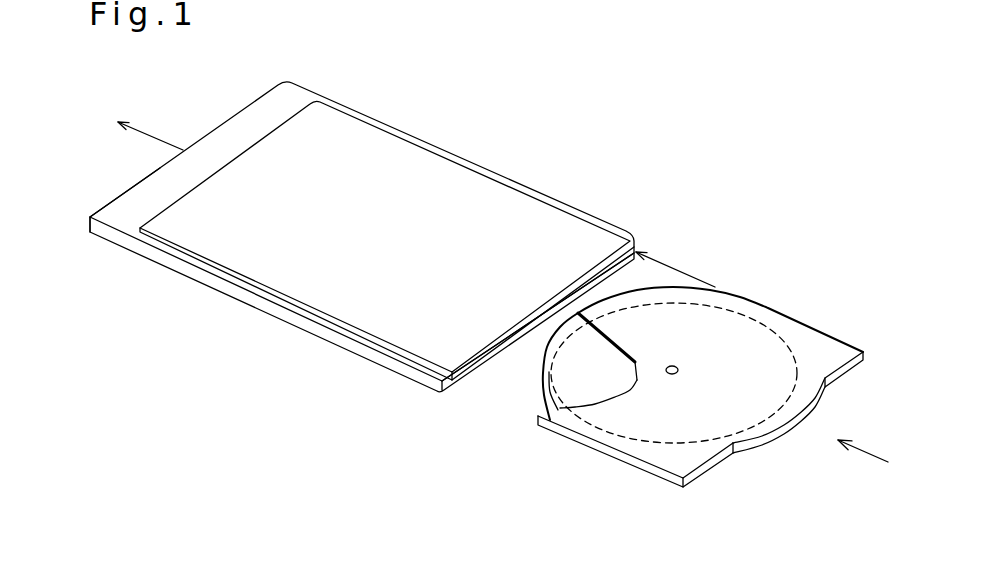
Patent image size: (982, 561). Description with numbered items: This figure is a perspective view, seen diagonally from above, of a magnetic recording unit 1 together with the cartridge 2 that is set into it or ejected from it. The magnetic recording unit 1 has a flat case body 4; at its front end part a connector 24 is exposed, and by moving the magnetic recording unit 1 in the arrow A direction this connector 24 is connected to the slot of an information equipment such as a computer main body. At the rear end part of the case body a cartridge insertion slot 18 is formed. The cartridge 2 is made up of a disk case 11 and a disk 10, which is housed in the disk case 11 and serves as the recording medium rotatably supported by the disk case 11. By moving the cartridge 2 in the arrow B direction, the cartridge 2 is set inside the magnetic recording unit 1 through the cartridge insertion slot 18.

The magnetic recording unit 1 is at (386, 279).
The cartridge 2 is at (713, 371).
The housing body 4 is at (326, 336).
The disk 10 is at (500, 351).
The disk case 11 is at (672, 455).
The cartridge insertion slot 18 is at (556, 427).
The connector 24 is at (137, 178).